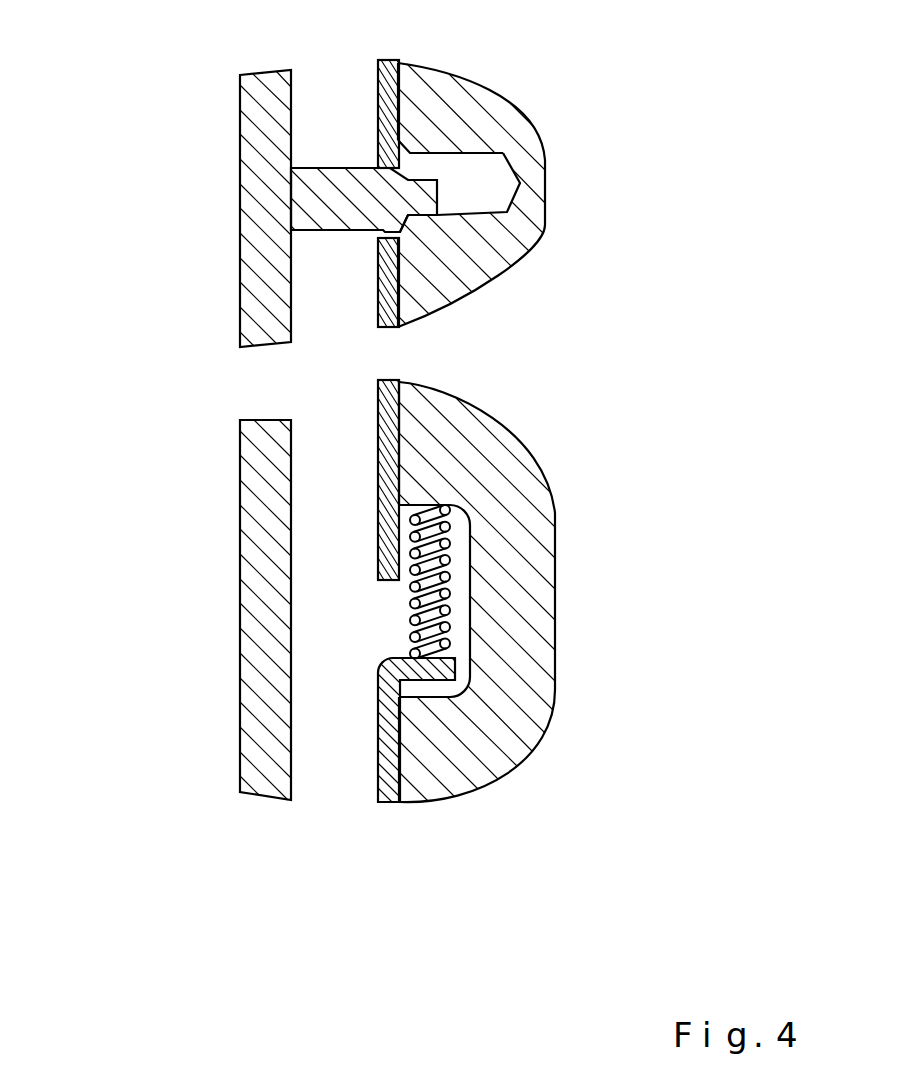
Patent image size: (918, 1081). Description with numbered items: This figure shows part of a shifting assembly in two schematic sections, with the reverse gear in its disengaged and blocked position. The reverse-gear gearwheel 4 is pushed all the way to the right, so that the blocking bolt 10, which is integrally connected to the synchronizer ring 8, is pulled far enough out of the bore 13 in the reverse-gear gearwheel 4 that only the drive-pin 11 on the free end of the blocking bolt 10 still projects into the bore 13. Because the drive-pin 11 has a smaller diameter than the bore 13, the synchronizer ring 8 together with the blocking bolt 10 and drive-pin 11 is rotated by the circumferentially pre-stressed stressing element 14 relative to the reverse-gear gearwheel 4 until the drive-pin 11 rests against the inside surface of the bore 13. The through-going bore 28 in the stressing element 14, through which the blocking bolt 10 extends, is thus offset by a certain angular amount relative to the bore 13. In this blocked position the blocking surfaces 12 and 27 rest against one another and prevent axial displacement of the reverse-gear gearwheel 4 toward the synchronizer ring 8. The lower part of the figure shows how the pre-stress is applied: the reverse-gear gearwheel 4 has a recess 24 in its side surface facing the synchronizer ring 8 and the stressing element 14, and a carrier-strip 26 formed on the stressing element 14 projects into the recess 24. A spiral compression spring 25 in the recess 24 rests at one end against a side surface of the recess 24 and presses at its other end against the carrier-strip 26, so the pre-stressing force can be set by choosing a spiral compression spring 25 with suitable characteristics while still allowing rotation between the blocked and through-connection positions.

The reverse-gear gearwheel 4 is at (380, 62).
The synchronizer ring 8 is at (263, 453).
The blocking bolt 10 is at (330, 185).
The drive-pin 11 is at (455, 213).
The blocking surface 12 is at (402, 234).
The bore 13 is at (487, 172).
The stressing element 14 is at (385, 308).
The recess 24 is at (460, 533).
The spiral compression spring 25 is at (450, 577).
The carrier-strip 26 is at (447, 675).
The blocking surface 27 is at (406, 150).
The through-going bore 28 is at (388, 222).